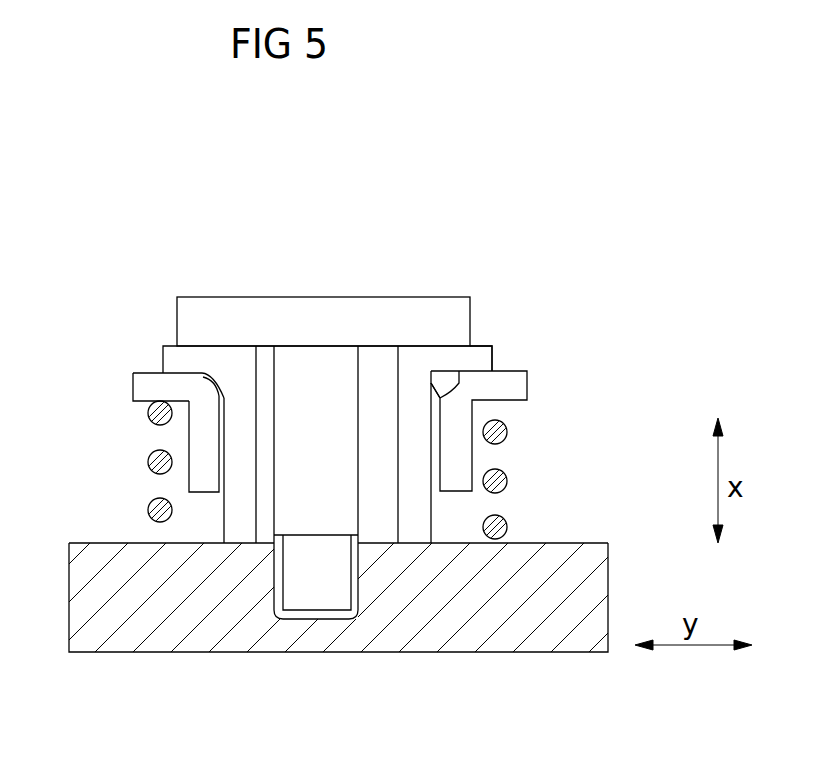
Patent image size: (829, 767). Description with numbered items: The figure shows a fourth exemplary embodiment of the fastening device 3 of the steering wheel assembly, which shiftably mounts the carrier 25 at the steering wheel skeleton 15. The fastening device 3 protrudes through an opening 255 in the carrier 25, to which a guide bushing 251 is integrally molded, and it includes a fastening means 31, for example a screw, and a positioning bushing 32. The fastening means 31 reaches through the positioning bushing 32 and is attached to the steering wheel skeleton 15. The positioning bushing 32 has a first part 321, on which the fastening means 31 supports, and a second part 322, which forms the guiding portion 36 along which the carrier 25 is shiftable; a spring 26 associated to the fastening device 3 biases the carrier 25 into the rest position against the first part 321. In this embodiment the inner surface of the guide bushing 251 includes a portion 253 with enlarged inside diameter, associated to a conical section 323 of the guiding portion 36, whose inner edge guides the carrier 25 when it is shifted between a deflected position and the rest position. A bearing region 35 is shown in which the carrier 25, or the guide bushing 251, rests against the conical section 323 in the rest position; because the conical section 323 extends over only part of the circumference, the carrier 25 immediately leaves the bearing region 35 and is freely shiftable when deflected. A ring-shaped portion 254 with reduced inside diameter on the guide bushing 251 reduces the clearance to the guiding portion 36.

The fastening device 3 is at (107, 233).
The steering wheel skeleton 15 is at (515, 637).
The carrier 25 is at (342, 369).
The guide bushing 251 is at (198, 478).
The portion with enlarged inside diameter 253 is at (460, 388).
The portion with reduced inside diameter 254 is at (440, 398).
The opening 255 is at (215, 385).
The spring 26 is at (147, 413).
The fastening means 31 is at (330, 271).
The positioning bushing 32 is at (340, 415).
The first part 321 is at (478, 355).
The second part 322 is at (410, 453).
The conical section 323 is at (215, 385).
The bearing region 35 is at (203, 374).
The guiding portion 36 is at (431, 415).